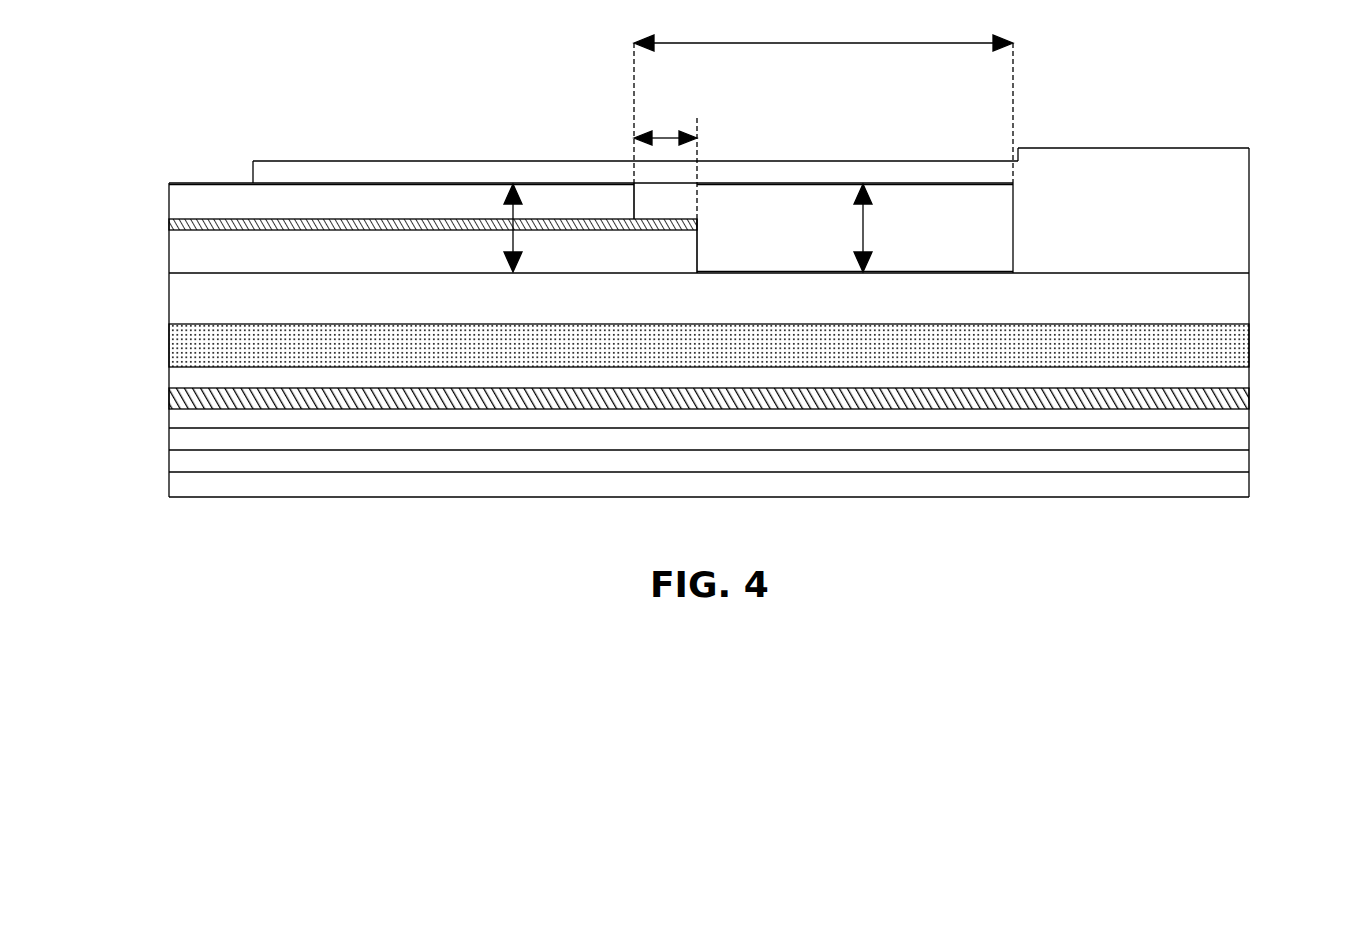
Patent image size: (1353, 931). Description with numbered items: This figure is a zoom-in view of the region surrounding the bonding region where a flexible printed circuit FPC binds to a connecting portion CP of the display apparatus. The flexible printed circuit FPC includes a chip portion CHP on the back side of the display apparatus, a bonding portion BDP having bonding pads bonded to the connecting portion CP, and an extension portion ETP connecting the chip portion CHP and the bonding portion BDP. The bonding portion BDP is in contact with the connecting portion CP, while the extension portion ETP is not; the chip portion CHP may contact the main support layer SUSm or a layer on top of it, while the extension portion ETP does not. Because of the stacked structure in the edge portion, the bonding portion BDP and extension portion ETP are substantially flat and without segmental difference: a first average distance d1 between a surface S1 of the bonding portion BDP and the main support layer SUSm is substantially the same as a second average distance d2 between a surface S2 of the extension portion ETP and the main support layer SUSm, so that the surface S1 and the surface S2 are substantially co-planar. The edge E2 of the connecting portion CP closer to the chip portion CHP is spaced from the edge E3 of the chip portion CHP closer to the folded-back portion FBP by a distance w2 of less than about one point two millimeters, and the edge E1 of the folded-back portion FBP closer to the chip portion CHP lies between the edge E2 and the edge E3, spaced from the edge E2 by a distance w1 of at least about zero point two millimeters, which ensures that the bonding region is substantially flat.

The connecting portion CP is at (183, 197).
The folded-back portion FBP is at (183, 253).
The main support layer SUSm is at (183, 303).
The bonding portion BDP is at (440, 153).
The chip portion CHP is at (1149, 146).
The flexible printed circuit FPC is at (1242, 207).
The surface of the bonding portion S1 is at (557, 184).
The surface of the extension portion S2 is at (927, 181).
The extension portion ETP is at (846, 152).
The edge of the folded-back portion E1 is at (697, 120).
The edge of the connecting portion E2 is at (635, 110).
The edge of the chip portion E3 is at (1013, 112).
The distance w1 is at (665, 126).
The distance w2 is at (823, 33).
The first average distance d1 is at (530, 228).
The second average distance d2 is at (879, 228).